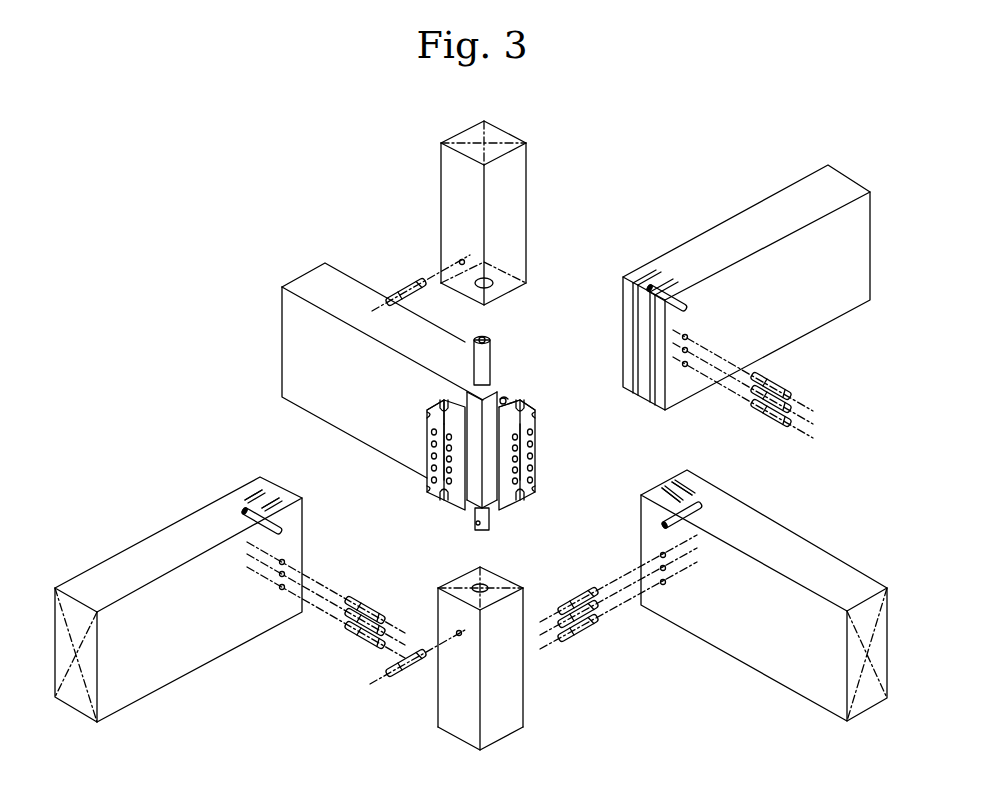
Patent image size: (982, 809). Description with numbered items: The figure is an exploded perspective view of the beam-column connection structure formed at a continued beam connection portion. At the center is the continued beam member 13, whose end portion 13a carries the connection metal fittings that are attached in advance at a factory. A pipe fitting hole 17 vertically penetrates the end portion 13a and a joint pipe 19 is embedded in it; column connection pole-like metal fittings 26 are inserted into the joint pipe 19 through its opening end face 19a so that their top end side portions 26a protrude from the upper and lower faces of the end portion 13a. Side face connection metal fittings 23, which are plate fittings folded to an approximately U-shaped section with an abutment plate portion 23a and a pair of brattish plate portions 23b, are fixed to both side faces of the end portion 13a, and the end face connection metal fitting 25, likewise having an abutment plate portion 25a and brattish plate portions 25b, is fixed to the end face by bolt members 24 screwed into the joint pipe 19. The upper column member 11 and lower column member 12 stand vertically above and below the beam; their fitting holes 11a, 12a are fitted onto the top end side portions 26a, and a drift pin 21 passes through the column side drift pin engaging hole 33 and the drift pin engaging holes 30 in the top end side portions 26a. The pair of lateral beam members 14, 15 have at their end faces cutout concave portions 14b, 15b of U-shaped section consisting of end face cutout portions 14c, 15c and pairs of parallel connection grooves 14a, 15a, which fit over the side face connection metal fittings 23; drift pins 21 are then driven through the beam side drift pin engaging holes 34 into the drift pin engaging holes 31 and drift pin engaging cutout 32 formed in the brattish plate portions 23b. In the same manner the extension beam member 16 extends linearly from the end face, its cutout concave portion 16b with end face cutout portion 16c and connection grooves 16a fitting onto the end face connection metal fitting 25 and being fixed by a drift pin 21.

The upper column member 11 is at (514, 193).
The fitting hole 11a is at (493, 280).
The lower column member 12 is at (515, 694).
The fitting hole 12a is at (488, 586).
The continued beam member 13 is at (338, 272).
The end portion 13a is at (470, 389).
The lateral beam member 14 is at (758, 217).
The connection grooves 14a is at (680, 278).
The cutout concave portion 14b is at (640, 200).
The end face cutout portion 14c is at (643, 297).
The lateral beam member 15 is at (150, 540).
The connection grooves 15a is at (270, 502).
The cutout concave portion 15b is at (262, 427).
The end face cutout portion 15c is at (278, 490).
The extension beam member 16 is at (830, 563).
The connection grooves 16a is at (685, 480).
The cutout concave portion 16b is at (752, 448).
The end face cutout portion 16c is at (668, 482).
The pipe fitting hole 17 is at (497, 392).
The joint pipe 19 is at (474, 372).
The opening end face 19a is at (491, 345).
The drift pin 21 is at (410, 287).
The side face connection metal fittings 23 is at (536, 410).
The abutment plate portion 23a is at (438, 410).
The brattish plate portions 23b is at (448, 446).
The bolt members 24 is at (507, 408).
The end face connection metal fitting 25 is at (504, 478).
The abutment plate portion 25a is at (499, 404).
The brattish plate portions 25b is at (518, 476).
The column connection pole-like metal fittings 26 is at (465, 431).
The top end side portion 26a is at (474, 352).
The drift pin engaging holes 30 is at (480, 339).
The drift pin engaging holes 31 is at (448, 478).
The drift pin engaging cutout 32 is at (527, 403).
The column side drift pin engaging hole 33 is at (461, 259).
The beam side drift pin engaging holes 34 is at (687, 353).